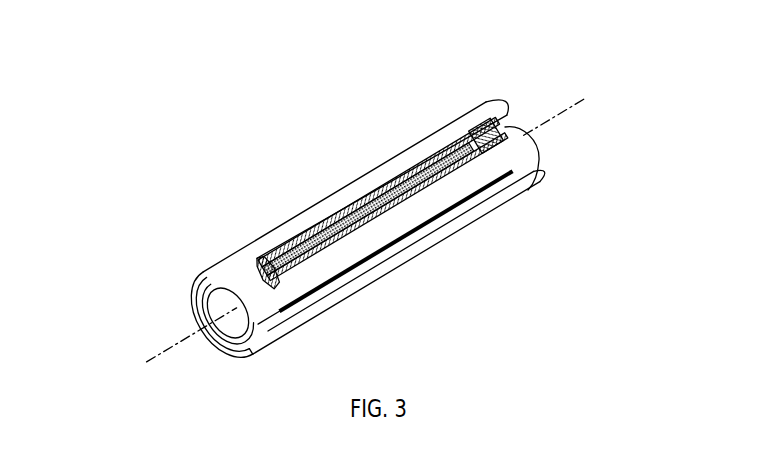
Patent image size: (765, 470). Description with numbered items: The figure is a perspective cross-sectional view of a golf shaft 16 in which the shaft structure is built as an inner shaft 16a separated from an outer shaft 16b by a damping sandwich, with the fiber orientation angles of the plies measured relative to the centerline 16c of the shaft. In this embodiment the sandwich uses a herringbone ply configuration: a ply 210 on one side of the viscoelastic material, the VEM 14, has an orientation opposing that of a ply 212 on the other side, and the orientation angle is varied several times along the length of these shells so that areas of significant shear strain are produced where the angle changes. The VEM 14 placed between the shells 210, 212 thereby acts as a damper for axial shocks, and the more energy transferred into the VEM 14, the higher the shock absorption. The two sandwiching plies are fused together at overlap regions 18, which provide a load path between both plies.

The VEM 14 is at (438, 178).
The golf shaft 16 is at (158, 240).
The inner shaft 16a is at (513, 127).
The outer shaft 16b is at (489, 101).
The centerline 16c is at (168, 347).
The overlap regions 18 is at (478, 142).
The ply 210 is at (487, 143).
The ply 212 is at (480, 161).